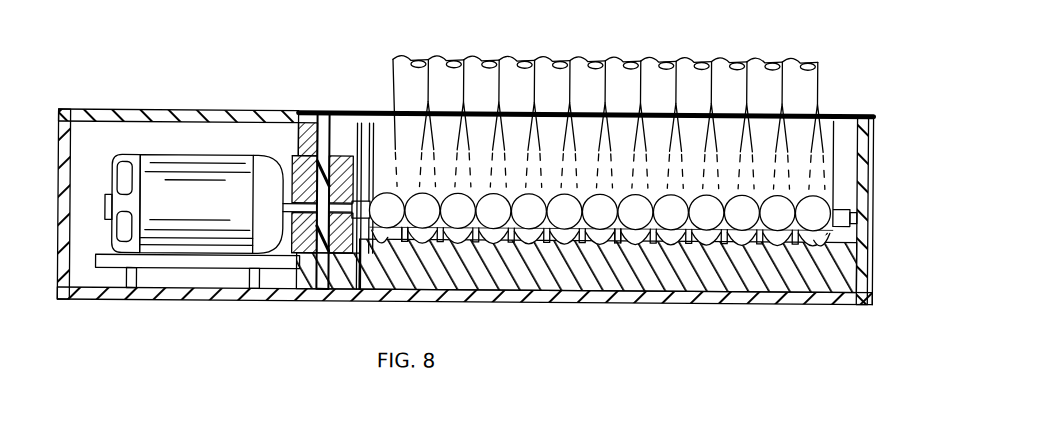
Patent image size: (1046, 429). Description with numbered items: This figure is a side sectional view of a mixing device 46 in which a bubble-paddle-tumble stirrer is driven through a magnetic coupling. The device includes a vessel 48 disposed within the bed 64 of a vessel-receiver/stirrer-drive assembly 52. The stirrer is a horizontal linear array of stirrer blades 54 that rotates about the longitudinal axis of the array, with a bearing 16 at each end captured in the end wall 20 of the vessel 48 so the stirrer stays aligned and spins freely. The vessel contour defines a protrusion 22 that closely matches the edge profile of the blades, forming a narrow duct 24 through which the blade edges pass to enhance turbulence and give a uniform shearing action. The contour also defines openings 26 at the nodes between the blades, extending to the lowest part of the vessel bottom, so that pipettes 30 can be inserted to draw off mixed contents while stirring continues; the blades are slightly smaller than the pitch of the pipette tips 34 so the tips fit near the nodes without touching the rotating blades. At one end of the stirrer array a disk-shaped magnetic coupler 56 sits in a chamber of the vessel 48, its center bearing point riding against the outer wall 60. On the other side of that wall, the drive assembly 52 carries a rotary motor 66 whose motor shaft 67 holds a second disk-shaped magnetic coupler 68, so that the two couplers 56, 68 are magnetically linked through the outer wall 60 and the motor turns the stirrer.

The bearing 16 is at (844, 204).
The end wall 20 is at (869, 152).
The protrusion 22 is at (393, 244).
The narrow duct 24 is at (457, 244).
The openings 26 is at (557, 245).
The pipettes 30 is at (817, 58).
The pipette tips 34 is at (814, 300).
The mixing device 46 is at (59, 110).
The vessel 48 is at (762, 288).
The vessel-receiver/stirrer-drive assembly 52 is at (58, 223).
The stirrer blades 54 is at (620, 243).
The magnetic coupler 56 is at (343, 155).
The outer wall 60 is at (323, 111).
The bed 64 is at (716, 290).
The rotary motor 66 is at (163, 160).
The motor shaft 67 is at (298, 207).
The magnetic coupler 68 is at (290, 190).